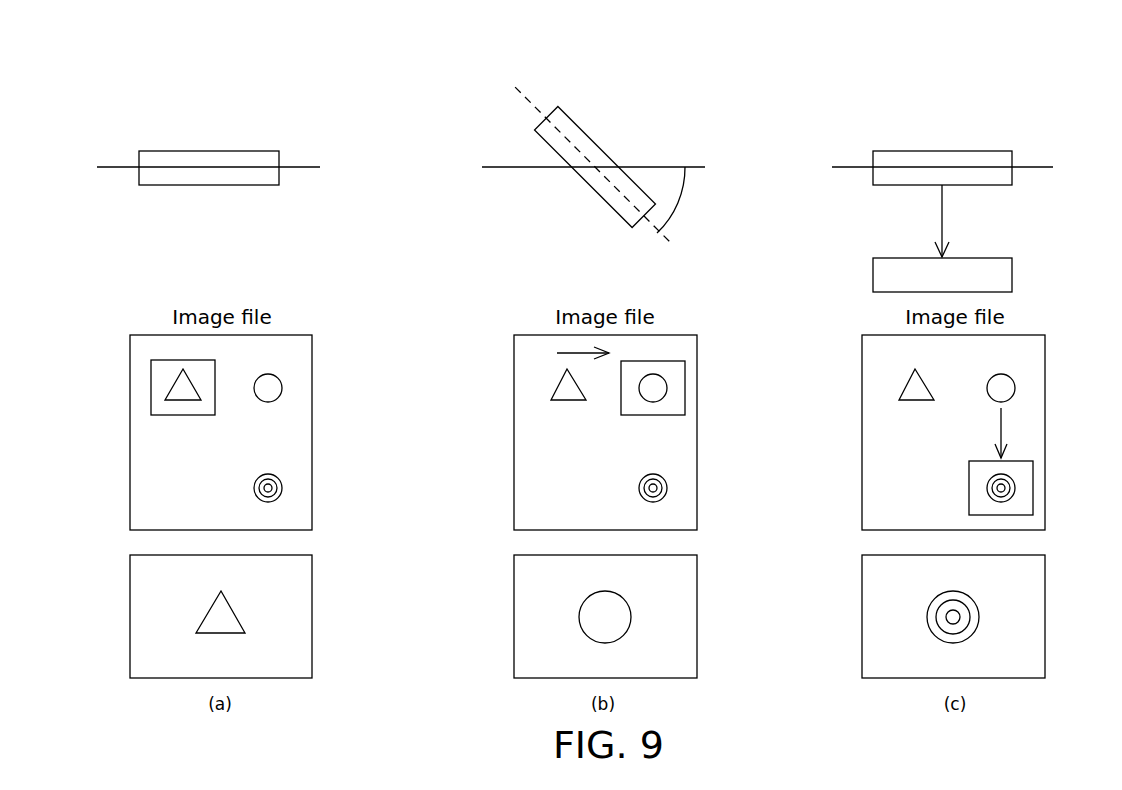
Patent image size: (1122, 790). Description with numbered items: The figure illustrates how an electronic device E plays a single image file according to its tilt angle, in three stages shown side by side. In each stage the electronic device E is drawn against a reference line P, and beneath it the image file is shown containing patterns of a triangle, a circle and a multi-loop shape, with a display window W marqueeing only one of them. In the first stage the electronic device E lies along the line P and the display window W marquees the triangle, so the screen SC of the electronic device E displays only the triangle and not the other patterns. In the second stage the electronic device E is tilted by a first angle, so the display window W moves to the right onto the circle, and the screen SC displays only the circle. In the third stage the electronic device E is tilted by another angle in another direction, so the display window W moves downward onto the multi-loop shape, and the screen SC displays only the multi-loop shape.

The electronic device E is at (259, 151).
The reference plane (horizontal line) P is at (583, 167).
The display window W is at (151, 388).
The screen SC is at (312, 592).